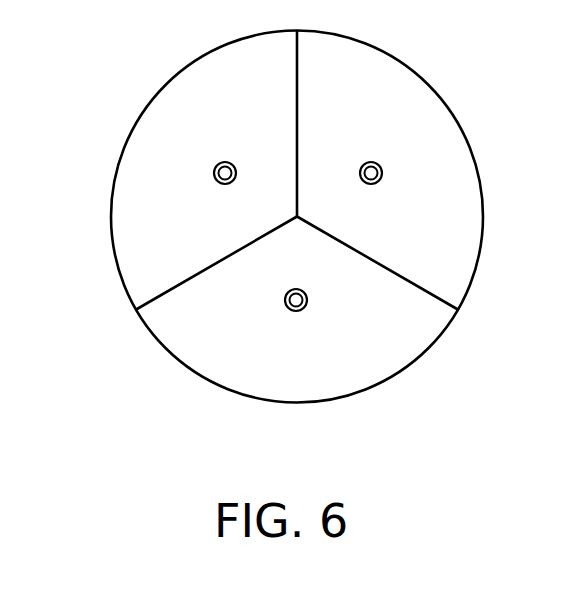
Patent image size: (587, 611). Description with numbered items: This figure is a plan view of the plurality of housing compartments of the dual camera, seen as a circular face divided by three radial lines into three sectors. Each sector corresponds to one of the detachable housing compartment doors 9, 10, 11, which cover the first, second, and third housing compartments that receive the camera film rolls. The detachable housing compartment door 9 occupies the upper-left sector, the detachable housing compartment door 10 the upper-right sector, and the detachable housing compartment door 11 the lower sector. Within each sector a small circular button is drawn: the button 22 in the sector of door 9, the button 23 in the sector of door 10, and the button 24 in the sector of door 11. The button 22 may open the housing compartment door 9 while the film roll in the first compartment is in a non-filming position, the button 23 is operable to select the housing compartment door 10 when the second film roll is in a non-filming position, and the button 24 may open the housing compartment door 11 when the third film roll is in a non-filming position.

The detachable housing compartment door 9 is at (162, 112).
The detachable housing compartment door 10 is at (433, 113).
The detachable housing compartment door 11 is at (228, 373).
The button 22 is at (213, 172).
The button 23 is at (383, 172).
The button 24 is at (296, 312).